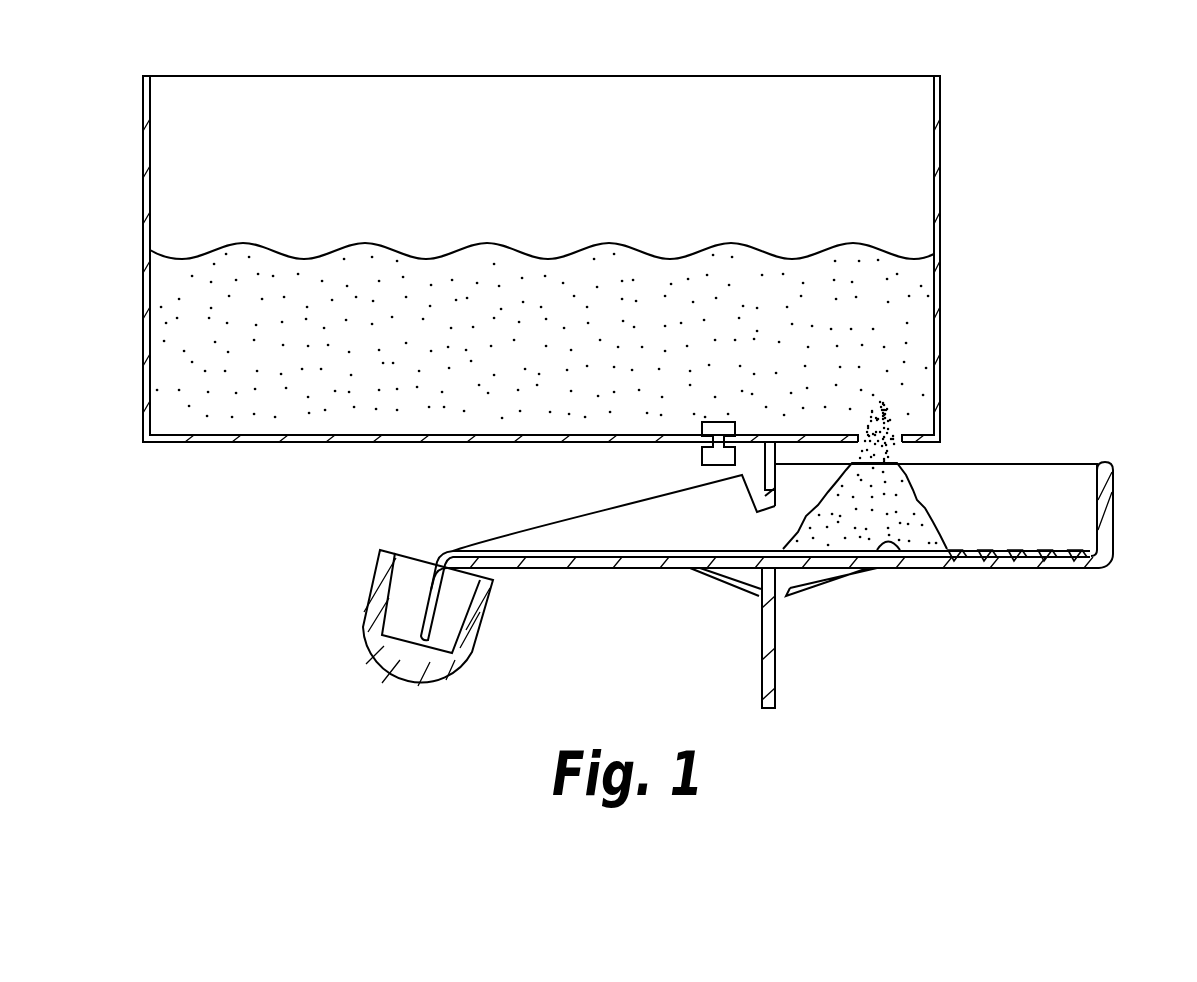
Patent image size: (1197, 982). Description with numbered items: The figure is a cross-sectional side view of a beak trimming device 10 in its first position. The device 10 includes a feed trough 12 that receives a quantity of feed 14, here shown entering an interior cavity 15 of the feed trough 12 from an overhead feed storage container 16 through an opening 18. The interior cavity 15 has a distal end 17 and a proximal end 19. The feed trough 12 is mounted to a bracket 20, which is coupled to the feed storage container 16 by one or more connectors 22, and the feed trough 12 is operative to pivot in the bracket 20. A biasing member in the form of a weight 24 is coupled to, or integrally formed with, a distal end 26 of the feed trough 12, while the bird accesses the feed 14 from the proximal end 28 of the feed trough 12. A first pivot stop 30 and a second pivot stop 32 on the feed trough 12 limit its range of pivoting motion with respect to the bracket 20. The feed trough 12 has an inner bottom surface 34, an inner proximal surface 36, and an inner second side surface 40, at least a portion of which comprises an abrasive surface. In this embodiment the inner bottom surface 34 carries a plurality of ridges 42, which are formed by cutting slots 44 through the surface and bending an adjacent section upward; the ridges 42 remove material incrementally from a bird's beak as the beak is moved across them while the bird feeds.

The beak trimming device 10 is at (1082, 38).
The feed trough 12 is at (880, 582).
The feed 14 is at (866, 243).
The interior cavity 15 is at (986, 508).
The feed storage container 16 is at (941, 119).
The distal end 17 is at (775, 518).
The opening 18 is at (900, 438).
The proximal end 19 is at (1092, 537).
The bracket 20 is at (672, 443).
The connector 22 is at (713, 466).
The weight 24 is at (392, 682).
The distal end 26 is at (420, 538).
The proximal end 28 is at (1128, 518).
The first pivot stop 30 is at (711, 580).
The second pivot stop 32 is at (831, 583).
The inner bottom surface 34 is at (891, 546).
The inner proximal surface 36 is at (1106, 464).
The inner second side surface 40 is at (1046, 509).
The ridges 42 is at (1010, 550).
The slots 44 is at (978, 586).